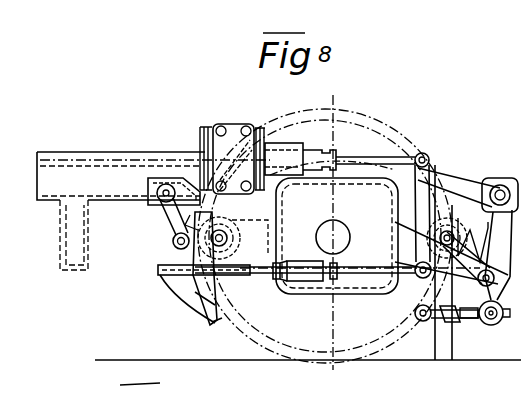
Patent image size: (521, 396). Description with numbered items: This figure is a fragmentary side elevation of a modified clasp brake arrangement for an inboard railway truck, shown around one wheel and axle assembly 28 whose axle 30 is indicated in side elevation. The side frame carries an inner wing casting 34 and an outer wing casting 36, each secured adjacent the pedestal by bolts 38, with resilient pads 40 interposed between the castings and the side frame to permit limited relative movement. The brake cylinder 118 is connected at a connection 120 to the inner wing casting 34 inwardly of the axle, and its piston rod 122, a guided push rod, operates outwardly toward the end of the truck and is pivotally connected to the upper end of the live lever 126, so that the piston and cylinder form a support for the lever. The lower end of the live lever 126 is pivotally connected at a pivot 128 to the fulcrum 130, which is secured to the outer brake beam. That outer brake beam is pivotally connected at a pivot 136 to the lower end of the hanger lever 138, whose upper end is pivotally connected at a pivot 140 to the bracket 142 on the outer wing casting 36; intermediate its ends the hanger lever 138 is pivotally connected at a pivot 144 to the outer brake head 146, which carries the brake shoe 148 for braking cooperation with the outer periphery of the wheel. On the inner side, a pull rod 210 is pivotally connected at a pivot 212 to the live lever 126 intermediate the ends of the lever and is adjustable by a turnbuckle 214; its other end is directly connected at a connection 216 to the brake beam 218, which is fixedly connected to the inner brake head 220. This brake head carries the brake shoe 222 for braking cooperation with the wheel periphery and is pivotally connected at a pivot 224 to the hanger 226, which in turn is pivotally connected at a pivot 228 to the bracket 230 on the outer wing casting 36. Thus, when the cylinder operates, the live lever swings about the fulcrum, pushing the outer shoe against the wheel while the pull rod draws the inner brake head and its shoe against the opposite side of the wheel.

The wheel and axle assembly 28 is at (356, 348).
The axle 30 is at (334, 222).
The inner wing casting 34 is at (370, 168).
The outer wing casting 36 is at (351, 160).
The bolt 38 is at (235, 232).
The resilient pad 40 is at (240, 248).
The brake cylinder 118 is at (232, 124).
The brake cylinder connection 120 is at (214, 124).
The piston rod 122 is at (307, 150).
The live lever 126 is at (400, 153).
The live lever lower pivot connection 128 is at (415, 312).
The fulcrum 130 is at (452, 335).
The outer brake beam pivot connection 136 is at (491, 326).
The hanger lever 138 is at (470, 195).
The hanger lever upper pivot connection 140 is at (495, 183).
The bracket 142 is at (500, 178).
The hanger lever intermediate pivot connection 144 is at (440, 246).
The outer brake head 146 is at (447, 235).
The brake shoe 148 is at (418, 320).
The pull rod 210 is at (336, 276).
The pull rod pivot connection 212 is at (415, 267).
The turnbuckle 214 is at (290, 283).
The pull rod brake beam connection 216 is at (168, 288).
The brake beam 218 is at (158, 268).
The inner brake head 220 is at (188, 292).
The brake shoe 222 is at (212, 306).
The brake head pivot connection 224 is at (173, 241).
The hanger 226 is at (175, 222).
The hanger pivot connection 228 is at (164, 184).
The bracket 230 is at (148, 182).